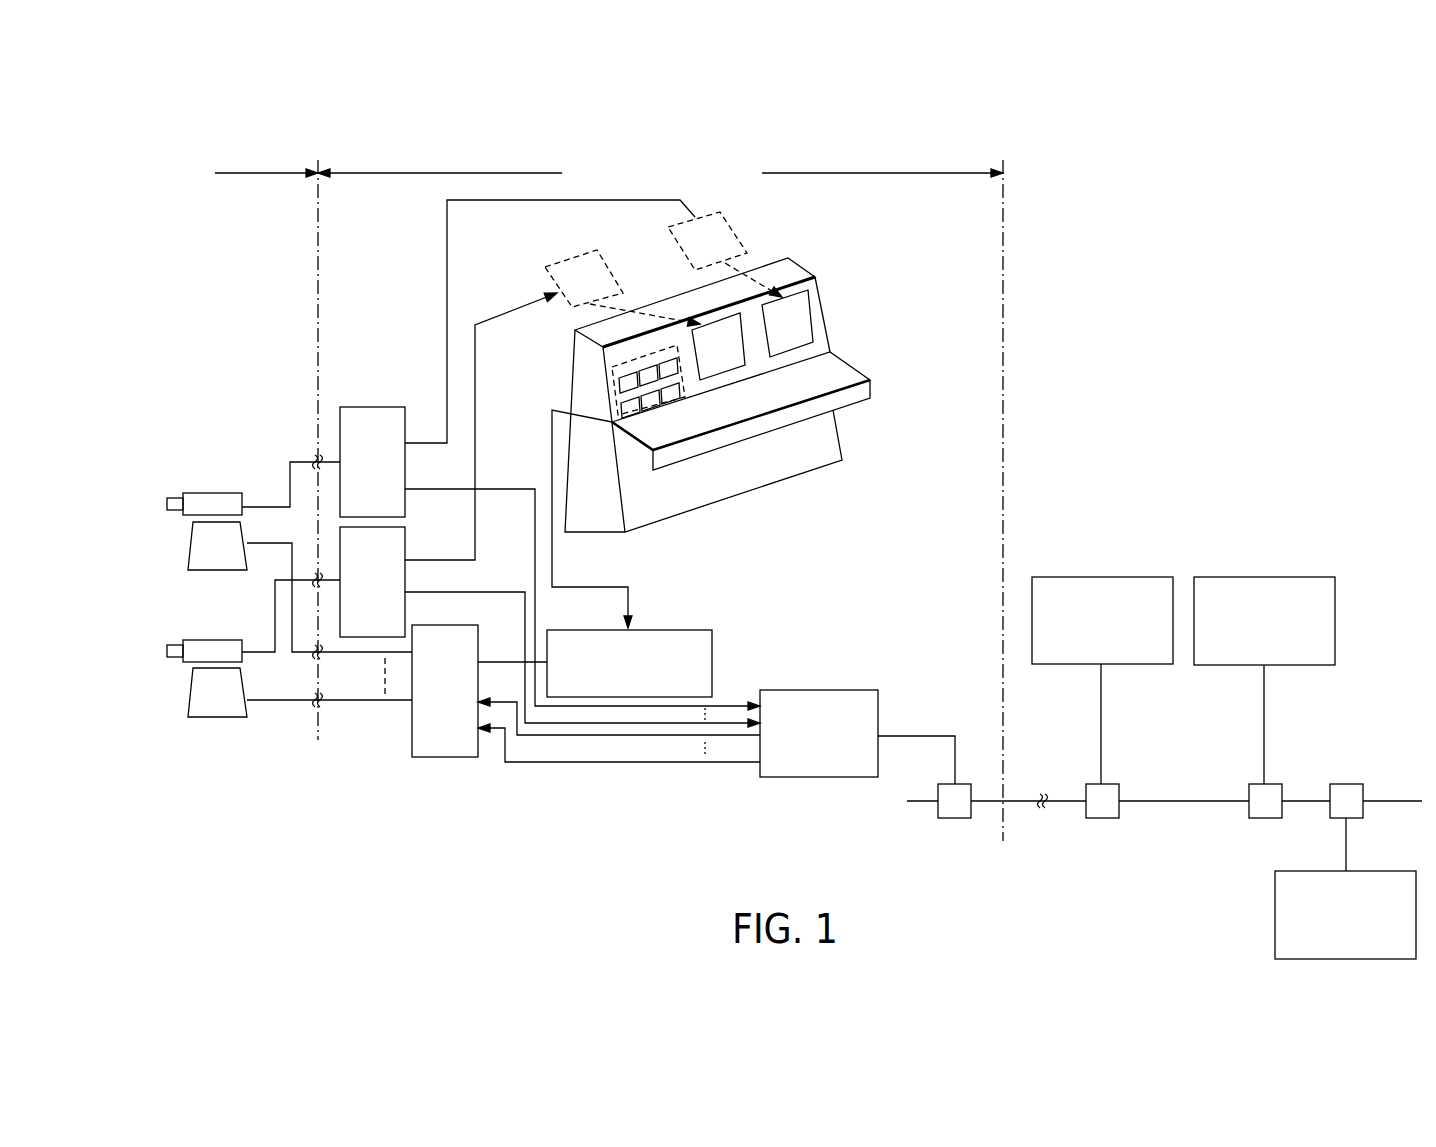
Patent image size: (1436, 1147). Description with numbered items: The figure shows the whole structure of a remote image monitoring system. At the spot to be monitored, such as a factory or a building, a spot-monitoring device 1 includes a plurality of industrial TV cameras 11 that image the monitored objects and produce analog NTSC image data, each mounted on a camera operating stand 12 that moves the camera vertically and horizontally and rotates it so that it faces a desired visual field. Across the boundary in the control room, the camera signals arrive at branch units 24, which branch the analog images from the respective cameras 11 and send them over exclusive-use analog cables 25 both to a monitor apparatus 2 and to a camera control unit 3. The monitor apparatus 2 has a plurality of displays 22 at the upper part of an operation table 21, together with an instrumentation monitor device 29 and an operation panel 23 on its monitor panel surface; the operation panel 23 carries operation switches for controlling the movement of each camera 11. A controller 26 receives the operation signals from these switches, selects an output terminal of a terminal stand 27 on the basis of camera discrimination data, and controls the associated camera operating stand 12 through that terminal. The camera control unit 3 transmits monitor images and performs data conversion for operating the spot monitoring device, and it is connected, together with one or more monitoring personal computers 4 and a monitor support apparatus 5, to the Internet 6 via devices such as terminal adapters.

The spot-monitoring device 1 is at (170, 397).
The monitor apparatus 2 is at (717, 390).
The camera control unit 3 is at (820, 778).
The monitoring personal computer 4 is at (1100, 577).
The monitor support apparatus 5 is at (1275, 913).
The Internet 6 is at (1165, 803).
The industrial TV camera 11 is at (215, 493).
The camera operating stand 12 is at (192, 548).
The operation table 21 is at (842, 368).
The display 22 is at (572, 255).
The operation panel 23 is at (603, 364).
The branch unit 24 is at (382, 407).
The exclusive-use analog cable 25 is at (475, 460).
The controller 26 is at (712, 662).
The terminal stand 27 is at (432, 758).
The instrumentation monitor device 29 is at (790, 310).